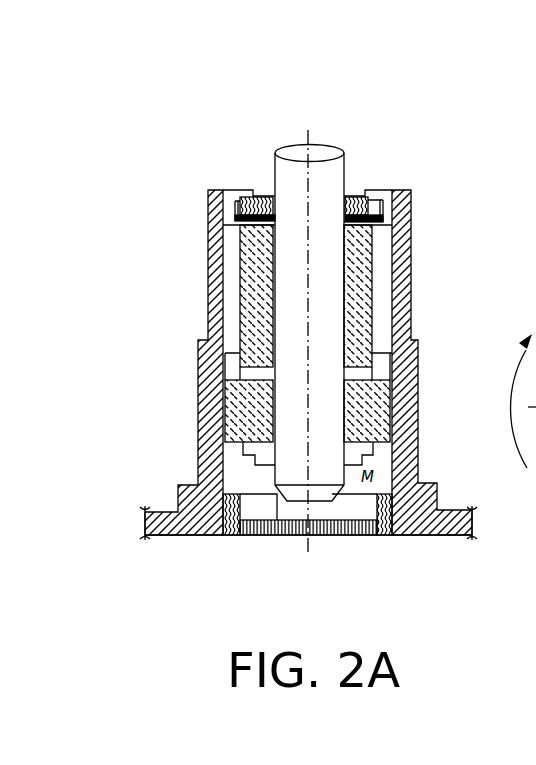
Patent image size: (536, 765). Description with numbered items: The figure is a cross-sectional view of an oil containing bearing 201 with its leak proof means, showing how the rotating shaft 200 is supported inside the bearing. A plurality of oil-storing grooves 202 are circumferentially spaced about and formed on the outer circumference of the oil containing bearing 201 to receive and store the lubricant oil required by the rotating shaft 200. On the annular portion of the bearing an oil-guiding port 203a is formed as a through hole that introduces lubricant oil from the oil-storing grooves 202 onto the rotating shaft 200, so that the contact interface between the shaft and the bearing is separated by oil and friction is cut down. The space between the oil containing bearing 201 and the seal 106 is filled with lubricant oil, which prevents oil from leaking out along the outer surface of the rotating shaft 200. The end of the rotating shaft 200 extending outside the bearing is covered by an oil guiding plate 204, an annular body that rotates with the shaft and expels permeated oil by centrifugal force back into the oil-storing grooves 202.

The seal 106 is at (246, 534).
The rotating shaft 200 is at (291, 188).
The oil containing bearing 201 is at (379, 413).
The oil-storing grooves 202 is at (236, 291).
The oil-guiding port 203a is at (255, 378).
The oil guiding plate 204 is at (358, 190).